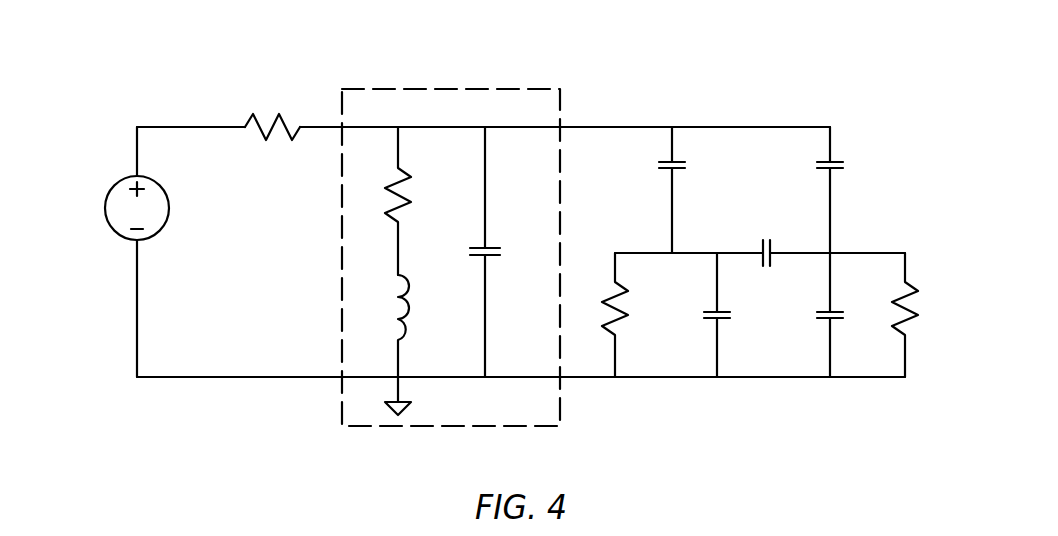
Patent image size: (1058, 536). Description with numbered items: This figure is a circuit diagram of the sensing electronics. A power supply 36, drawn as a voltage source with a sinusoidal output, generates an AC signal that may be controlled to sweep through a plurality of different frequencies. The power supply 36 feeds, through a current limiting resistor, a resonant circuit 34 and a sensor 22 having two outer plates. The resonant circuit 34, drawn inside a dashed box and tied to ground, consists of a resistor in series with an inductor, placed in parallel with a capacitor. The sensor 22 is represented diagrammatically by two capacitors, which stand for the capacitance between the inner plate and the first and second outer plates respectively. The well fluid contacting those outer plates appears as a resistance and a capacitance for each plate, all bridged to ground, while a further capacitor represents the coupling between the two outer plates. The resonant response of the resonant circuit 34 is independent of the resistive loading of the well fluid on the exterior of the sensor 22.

The sensor 22 is at (499, 239).
The resonant circuit 34 is at (505, 426).
The power supply 36 is at (113, 232).